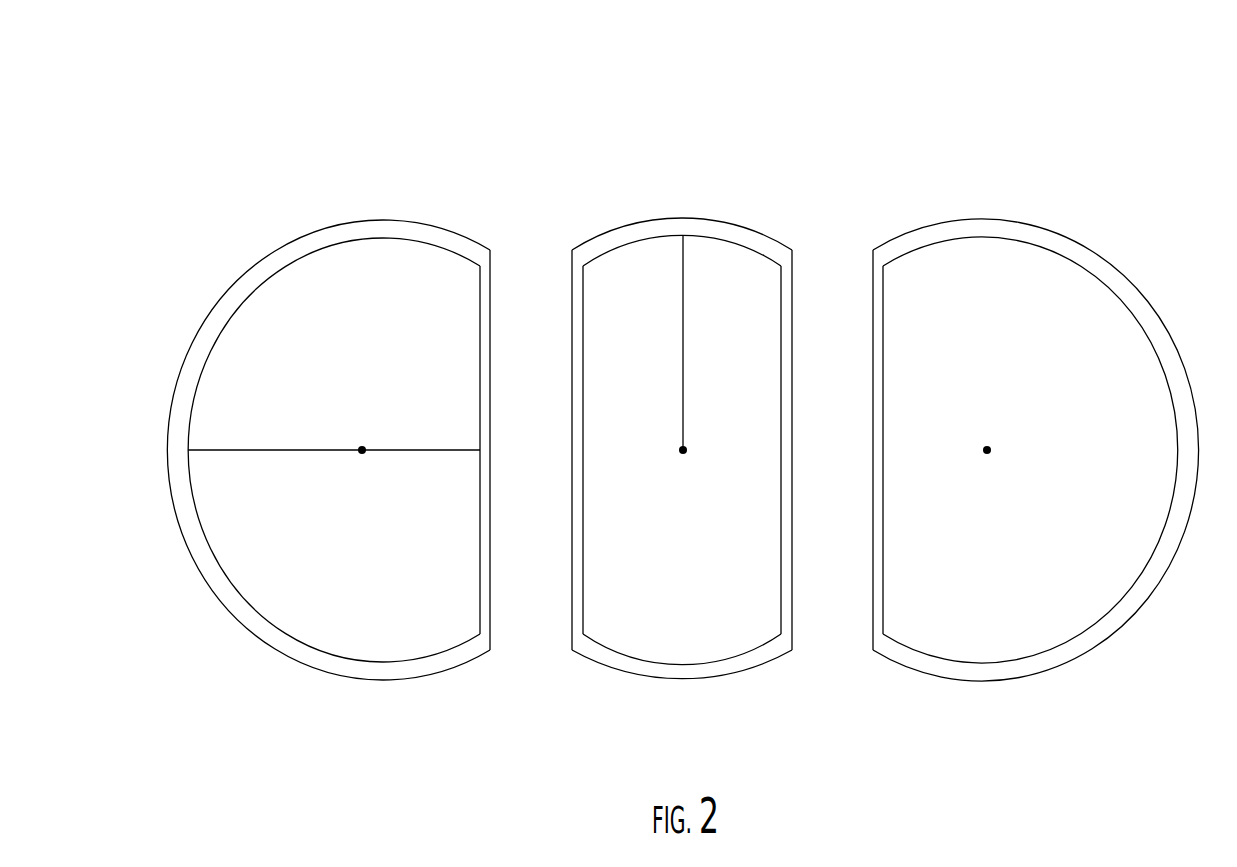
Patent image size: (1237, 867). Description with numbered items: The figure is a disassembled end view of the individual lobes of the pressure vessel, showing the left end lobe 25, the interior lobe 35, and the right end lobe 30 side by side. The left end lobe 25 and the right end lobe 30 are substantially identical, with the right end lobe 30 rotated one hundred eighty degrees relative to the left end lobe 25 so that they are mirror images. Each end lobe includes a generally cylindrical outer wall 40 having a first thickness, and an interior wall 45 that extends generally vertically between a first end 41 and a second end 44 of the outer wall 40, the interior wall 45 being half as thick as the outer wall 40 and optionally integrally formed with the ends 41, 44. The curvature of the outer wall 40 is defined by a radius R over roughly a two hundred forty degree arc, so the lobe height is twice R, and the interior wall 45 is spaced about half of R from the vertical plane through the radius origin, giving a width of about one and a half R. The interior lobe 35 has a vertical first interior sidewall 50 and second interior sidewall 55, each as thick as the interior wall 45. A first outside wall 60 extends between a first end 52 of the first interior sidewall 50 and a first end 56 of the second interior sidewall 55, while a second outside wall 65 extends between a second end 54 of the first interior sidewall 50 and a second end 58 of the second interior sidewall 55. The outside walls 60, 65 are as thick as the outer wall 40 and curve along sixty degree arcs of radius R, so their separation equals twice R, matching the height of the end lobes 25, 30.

The left end lobe 25 is at (236, 133).
The right end lobe 30 is at (1114, 148).
The interior lobe 35 is at (679, 103).
The cylindrical outer wall 40 is at (318, 672).
The first end 41 is at (493, 260).
The second end 44 is at (492, 648).
The interior wall 45 is at (480, 535).
The first interior sidewall 50 is at (583, 393).
The first end of the first interior sidewall 52 is at (572, 262).
The second end of the first interior sidewall 54 is at (573, 648).
The second interior sidewall 55 is at (777, 470).
The first end of the second interior sidewall 56 is at (797, 262).
The second end of the second interior sidewall 58 is at (793, 625).
The first outside wall 60 is at (718, 222).
The second outside wall 65 is at (675, 680).